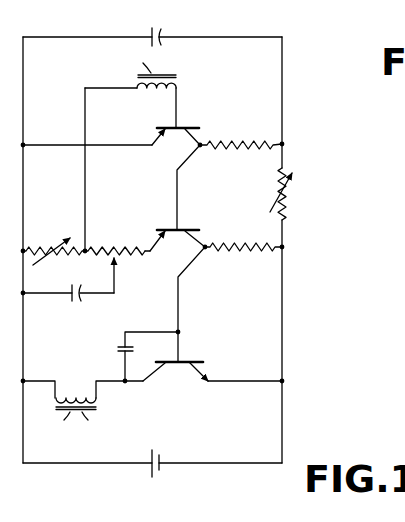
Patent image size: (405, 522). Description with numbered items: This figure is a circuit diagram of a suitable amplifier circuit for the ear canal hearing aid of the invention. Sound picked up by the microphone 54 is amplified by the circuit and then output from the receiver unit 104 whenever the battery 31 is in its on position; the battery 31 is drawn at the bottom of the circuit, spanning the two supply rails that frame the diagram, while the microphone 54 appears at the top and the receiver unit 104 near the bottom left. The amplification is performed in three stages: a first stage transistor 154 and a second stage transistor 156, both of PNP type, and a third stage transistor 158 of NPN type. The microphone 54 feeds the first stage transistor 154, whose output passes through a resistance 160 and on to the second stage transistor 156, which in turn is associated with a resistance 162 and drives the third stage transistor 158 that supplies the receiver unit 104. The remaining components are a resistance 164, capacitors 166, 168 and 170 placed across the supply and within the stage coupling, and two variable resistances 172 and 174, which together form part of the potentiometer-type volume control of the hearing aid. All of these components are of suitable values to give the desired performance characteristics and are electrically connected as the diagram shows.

The capacitor 166 is at (163, 36).
The microphone 54 is at (163, 73).
The first stage transistor 154 is at (173, 135).
The resistance 160 is at (246, 155).
The variable resistance 172 is at (288, 199).
The variable resistance 174 is at (50, 251).
The resistance 164 is at (108, 250).
The second stage transistor 156 is at (175, 238).
The resistance 162 is at (247, 255).
The capacitor 168 is at (84, 297).
The capacitor 170 is at (118, 350).
The third stage transistor 158 is at (185, 367).
The receiver unit 104 is at (90, 413).
The battery 31 is at (163, 456).